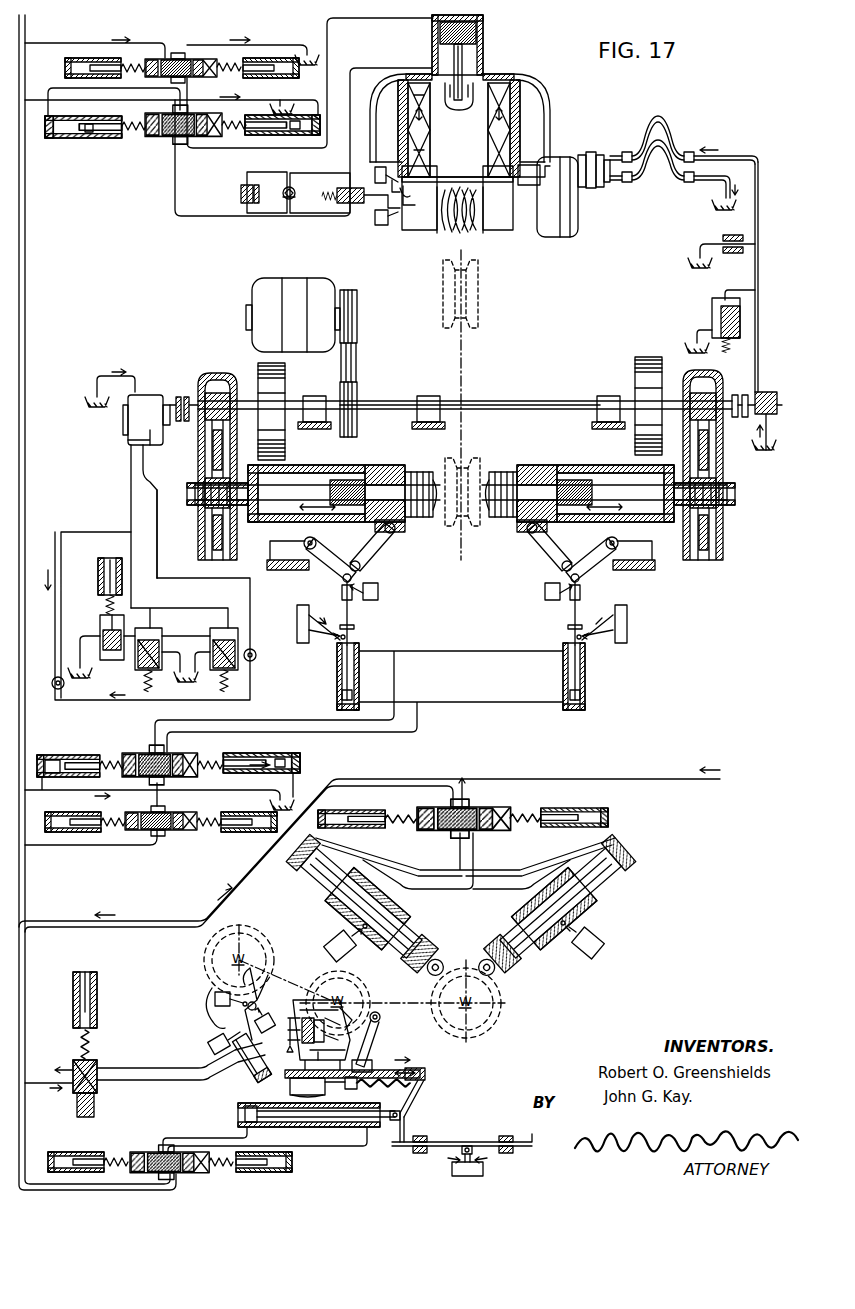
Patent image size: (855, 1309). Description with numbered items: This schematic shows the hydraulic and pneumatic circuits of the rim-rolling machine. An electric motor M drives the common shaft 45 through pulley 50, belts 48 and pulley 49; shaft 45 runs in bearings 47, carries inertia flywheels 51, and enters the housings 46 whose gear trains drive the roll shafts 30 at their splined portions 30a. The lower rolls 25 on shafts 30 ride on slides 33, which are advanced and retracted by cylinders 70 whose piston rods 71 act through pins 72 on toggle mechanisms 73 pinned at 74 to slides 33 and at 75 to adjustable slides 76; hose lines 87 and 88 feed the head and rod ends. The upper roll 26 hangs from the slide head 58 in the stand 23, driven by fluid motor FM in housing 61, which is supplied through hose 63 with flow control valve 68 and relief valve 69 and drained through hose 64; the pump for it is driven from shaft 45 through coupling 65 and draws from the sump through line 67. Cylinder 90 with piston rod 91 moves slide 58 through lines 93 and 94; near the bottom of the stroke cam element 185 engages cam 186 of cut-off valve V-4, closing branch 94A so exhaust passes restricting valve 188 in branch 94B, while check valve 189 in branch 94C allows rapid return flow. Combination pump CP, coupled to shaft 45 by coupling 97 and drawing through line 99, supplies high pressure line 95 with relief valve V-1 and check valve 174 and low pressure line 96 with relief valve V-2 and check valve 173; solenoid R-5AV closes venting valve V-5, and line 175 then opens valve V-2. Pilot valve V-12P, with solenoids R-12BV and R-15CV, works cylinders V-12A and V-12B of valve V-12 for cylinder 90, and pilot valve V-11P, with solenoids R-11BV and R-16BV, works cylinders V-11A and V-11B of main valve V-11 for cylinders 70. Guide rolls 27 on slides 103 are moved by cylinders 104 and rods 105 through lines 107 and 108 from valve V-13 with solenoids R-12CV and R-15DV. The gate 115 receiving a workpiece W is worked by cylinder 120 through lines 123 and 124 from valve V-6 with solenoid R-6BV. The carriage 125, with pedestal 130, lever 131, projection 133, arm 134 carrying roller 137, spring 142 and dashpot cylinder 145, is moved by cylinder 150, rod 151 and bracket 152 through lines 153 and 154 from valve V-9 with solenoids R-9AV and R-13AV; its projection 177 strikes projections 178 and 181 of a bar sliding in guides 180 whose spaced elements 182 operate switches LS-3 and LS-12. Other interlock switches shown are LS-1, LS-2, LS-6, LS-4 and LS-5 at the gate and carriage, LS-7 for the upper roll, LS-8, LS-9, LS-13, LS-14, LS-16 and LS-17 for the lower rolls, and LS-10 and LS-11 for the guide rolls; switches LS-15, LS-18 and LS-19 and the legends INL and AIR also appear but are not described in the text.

The piston 90 is at (478, 40).
The piston rod 91 is at (463, 61).
The pipe line 93 is at (398, 22).
The pipe line 94 is at (362, 68).
The valve box 94A is at (346, 174).
The orifice 94B is at (245, 185).
The check valve 94C is at (286, 189).
The restriction 188 is at (241, 197).
The valve 189 is at (284, 198).
The lever 185 is at (392, 189).
The lever 186 is at (408, 192).
The spindle head 58 is at (457, 195).
The bellows coupling 26 is at (466, 232).
The motor 61 is at (562, 240).
The supply line 63 is at (759, 183).
The drain line 64 is at (706, 184).
The orifice 68 is at (744, 236).
The relief valve 69 is at (713, 302).
The valve 65 is at (757, 393).
The drain 67 is at (769, 438).
The drain 99 is at (121, 386).
The coupling 97 is at (181, 396).
The shaft 45 is at (562, 395).
The frame 46 is at (193, 464).
The gear 51 is at (286, 391).
The bearing 47 is at (320, 394).
The pulley 50 is at (358, 300).
The belt 48 is at (357, 368).
The pulley 49 is at (358, 396).
The cylinder 33 is at (362, 472).
The spindle 30 is at (318, 485).
The spindle end 30a is at (200, 488).
The chuck 25 is at (461, 502).
The bracket 76 is at (284, 543).
The pivot 75 is at (462, 536).
The link 73 is at (346, 566).
The link 74 is at (386, 546).
The pivot 72 is at (343, 580).
The rod 71 is at (355, 611).
The cylinder 70 is at (337, 692).
The pipe line 88 is at (472, 650).
The pipe line 87 is at (484, 704).
The pipe line 95 is at (55, 638).
The pipe line 96 is at (163, 553).
The pipe line 175 is at (195, 608).
The check valve 173 is at (256, 657).
The check valve 174 is at (70, 686).
The pipe line 107 is at (404, 863).
The pipe line 108 is at (512, 891).
The cylinder 104 is at (313, 888).
The piston 105 is at (342, 897).
The piston rod 103 is at (396, 951).
The head 23 is at (420, 939).
The roller 27 is at (425, 979).
The pipe 124 is at (149, 1068).
The pipe 123 is at (175, 1083).
The cylinder 120 is at (243, 1064).
The arm 115 is at (212, 1011).
The clamp 130 is at (302, 1008).
The clamp jaw 131 is at (322, 1053).
The clamp arm 133 is at (355, 1017).
The pivot 137 is at (380, 1017).
The link 134 is at (370, 1049).
The cylinder 145 is at (302, 1095).
The spring 142 is at (395, 1085).
The slide 125 is at (427, 1072).
The link 152 is at (410, 1098).
The rod 177 is at (404, 1134).
The pivot 181 is at (401, 1135).
The bar 178 is at (530, 1135).
The guide 180 is at (431, 1136).
The cam 182 is at (465, 1144).
The cylinder 150 is at (279, 1105).
The piston rod 151 is at (360, 1110).
The pipe 153 is at (240, 1129).
The pipe 154 is at (357, 1133).
The relay valve R-12BV is at (96, 38).
The valve V-12P is at (167, 58).
The relay valve R-15CV is at (275, 57).
The valve V-12B is at (78, 138).
The valve V-12 is at (230, 112).
The valve V-12A is at (295, 140).
The valve V-4 is at (346, 188).
The limit switch LS-7 is at (376, 173).
The limit switch LS-15 is at (384, 225).
The flow meter FM is at (594, 175).
The control panel CP is at (146, 420).
The motor M is at (293, 315).
The workpiece W is at (478, 320).
The limit switch LS-13 is at (374, 599).
The limit switch LS-18 is at (307, 617).
The limit switch LS-16 is at (333, 616).
The limit switch LS-8 is at (327, 639).
The limit switch LS-14 is at (554, 599).
The limit switch LS-17 is at (601, 616).
The limit switch LS-19 is at (634, 617).
The limit switch LS-9 is at (598, 640).
The relay valve R-5AV is at (104, 576).
The valve V-5 is at (100, 624).
The valve V-1 is at (160, 660).
The valve V-2 is at (206, 660).
The valve V-11B is at (82, 755).
The valve V-11 is at (146, 753).
The valve V-11A is at (278, 752).
The relay valve R-11BV is at (58, 832).
The valve V-11P is at (192, 831).
The relay valve R-16BV is at (262, 838).
The inlet INL is at (369, 847).
The air supply AIR is at (737, 776).
The relay valve R-15DV is at (318, 812).
The valve V-13 is at (516, 835).
The relay valve R-12CV is at (598, 810).
The limit switch LS-10 is at (352, 932).
The limit switch LS-11 is at (580, 926).
The relay valve R-6BV is at (96, 993).
The valve V-6 is at (97, 1062).
The limit switch LS-1 is at (236, 1003).
The limit switch LS-6 is at (274, 1017).
The limit switch LS-2 is at (215, 1043).
The limit switch LS-4 is at (330, 1015).
The limit switch LS-5 is at (339, 1029).
The limit switch LS-3 is at (456, 1166).
The limit switch LS-12 is at (499, 1166).
The relay valve R-13AV is at (97, 1152).
The valve V-9 is at (152, 1152).
The relay valve R-9AV is at (244, 1174).